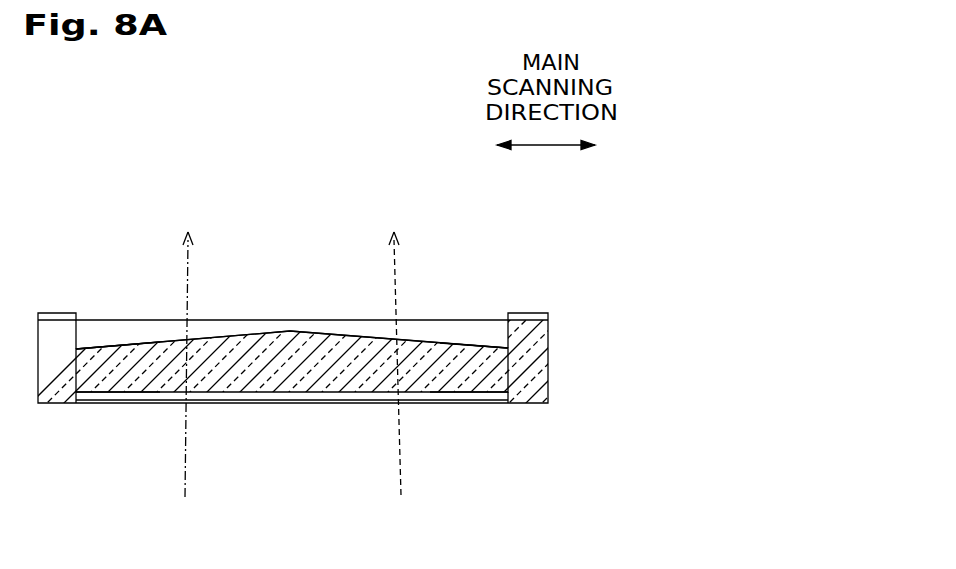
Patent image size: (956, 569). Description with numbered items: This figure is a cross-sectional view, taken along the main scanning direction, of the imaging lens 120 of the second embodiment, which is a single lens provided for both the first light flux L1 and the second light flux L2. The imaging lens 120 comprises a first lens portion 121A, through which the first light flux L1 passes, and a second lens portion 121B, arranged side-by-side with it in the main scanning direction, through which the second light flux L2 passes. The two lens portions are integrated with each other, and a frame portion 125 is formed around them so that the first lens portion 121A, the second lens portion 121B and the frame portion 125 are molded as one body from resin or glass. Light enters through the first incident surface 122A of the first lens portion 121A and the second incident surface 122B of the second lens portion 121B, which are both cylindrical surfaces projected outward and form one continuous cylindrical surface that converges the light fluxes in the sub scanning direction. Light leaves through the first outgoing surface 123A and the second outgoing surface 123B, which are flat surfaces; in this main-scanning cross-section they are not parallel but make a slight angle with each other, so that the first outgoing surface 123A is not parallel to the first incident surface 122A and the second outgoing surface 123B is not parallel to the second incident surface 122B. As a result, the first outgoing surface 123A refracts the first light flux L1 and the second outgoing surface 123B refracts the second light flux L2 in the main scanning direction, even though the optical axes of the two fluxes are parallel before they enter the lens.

The imaging lens 120 is at (502, 249).
The first lens portion 121A is at (346, 348).
The second lens portion 121B is at (245, 345).
The first incident surface 122A is at (474, 401).
The second incident surface 122B is at (132, 402).
The first outgoing surface 123A is at (452, 344).
The second outgoing surface 123B is at (146, 344).
The frame portion 125 is at (535, 362).
The first light flux L1 is at (401, 450).
The second light flux L2 is at (185, 443).